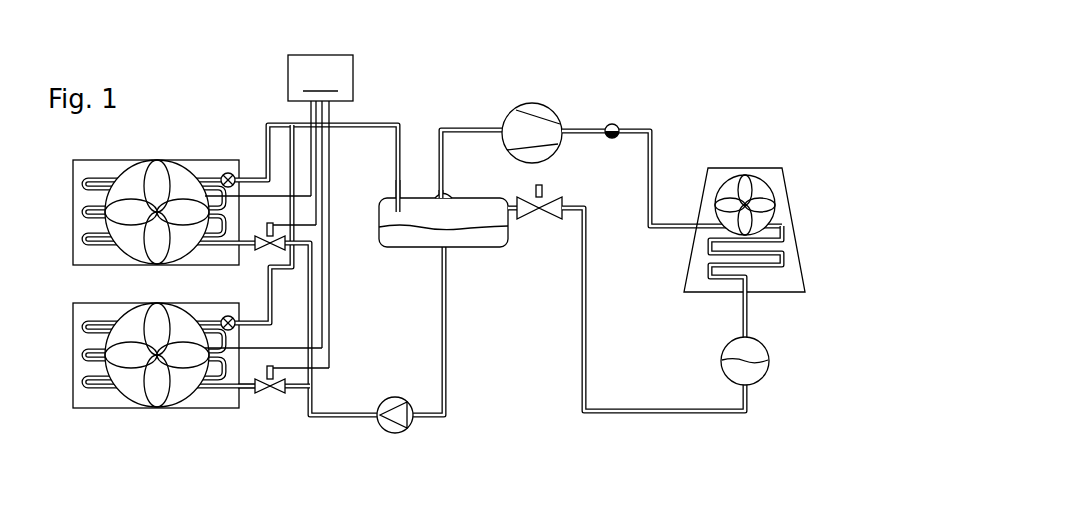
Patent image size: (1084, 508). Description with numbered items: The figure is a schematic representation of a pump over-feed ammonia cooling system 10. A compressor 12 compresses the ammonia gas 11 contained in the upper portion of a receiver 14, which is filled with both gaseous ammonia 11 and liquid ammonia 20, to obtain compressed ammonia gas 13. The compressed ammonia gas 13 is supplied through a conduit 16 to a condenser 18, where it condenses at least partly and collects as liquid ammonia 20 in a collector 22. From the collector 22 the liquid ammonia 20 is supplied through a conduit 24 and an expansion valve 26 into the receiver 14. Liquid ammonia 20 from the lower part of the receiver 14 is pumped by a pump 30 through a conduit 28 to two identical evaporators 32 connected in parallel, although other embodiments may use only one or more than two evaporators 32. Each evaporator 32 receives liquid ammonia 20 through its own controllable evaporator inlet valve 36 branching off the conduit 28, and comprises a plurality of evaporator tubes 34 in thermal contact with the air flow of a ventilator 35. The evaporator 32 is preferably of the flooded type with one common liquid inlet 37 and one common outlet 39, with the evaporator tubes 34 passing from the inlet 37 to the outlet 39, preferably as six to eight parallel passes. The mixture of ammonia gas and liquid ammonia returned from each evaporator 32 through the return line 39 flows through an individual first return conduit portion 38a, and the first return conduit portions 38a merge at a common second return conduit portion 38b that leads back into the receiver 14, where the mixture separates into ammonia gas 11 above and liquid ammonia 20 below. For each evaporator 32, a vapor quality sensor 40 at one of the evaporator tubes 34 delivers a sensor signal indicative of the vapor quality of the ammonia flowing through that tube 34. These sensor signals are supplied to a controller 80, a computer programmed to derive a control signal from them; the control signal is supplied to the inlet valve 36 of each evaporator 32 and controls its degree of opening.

The cooling system 10 is at (682, 64).
The ammonia gas 11 is at (467, 212).
The compressor 12 is at (535, 103).
The compressed ammonia gas 13 is at (585, 128).
The receiver 14 is at (493, 248).
The conduit 16 is at (648, 168).
The condenser 18 is at (738, 168).
The liquid ammonia 20 is at (403, 233).
The collector 22 is at (755, 333).
The conduit 24 is at (586, 352).
The expansion valve 26 is at (553, 222).
The conduit 28 is at (330, 418).
The pump 30 is at (413, 420).
The evaporator 32 is at (62, 186).
The evaporator tube 34 is at (103, 318).
The ventilator 35 is at (173, 407).
The evaporator inlet valve 36 is at (263, 396).
The liquid inlet 37 is at (250, 393).
The first return conduit portion 38a is at (297, 258).
The second return conduit portion 38b is at (360, 123).
The outlet 39 is at (264, 319).
The vapor quality sensor 40 is at (221, 316).
The controller 80 is at (279, 211).